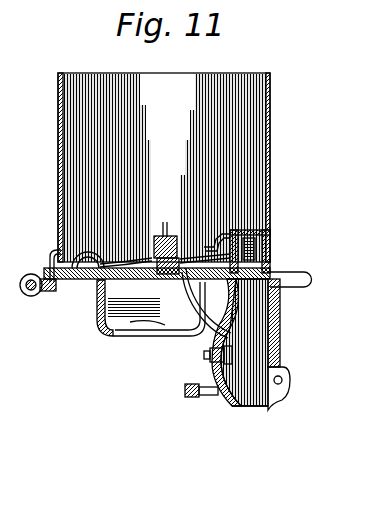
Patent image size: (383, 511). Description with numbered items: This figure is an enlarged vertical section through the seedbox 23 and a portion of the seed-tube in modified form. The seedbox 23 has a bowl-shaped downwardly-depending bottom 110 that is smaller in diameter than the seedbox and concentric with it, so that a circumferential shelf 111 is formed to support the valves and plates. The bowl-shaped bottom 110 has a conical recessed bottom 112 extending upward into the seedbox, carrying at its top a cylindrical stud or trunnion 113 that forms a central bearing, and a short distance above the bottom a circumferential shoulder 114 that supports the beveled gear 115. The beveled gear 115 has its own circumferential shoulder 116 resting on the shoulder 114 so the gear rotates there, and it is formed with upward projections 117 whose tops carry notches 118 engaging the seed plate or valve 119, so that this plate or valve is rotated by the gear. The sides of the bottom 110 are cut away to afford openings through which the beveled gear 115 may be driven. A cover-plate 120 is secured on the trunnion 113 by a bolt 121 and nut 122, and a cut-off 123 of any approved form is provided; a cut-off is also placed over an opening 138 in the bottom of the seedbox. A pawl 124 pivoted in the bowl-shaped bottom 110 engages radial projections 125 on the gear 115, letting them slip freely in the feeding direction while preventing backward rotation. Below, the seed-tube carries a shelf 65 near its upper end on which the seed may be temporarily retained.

The seedbox 23 is at (164, 167).
The shelf 65 is at (236, 404).
The bowl-shaped downwardly-depending bottom 110 is at (103, 328).
The circumferential shelf 111 is at (86, 284).
The recessed bottom 112 is at (157, 328).
The cylindrical stud or trunnion 113 is at (177, 258).
The circumferential shoulder 114 is at (122, 336).
The beveled gear 115 is at (238, 309).
The circumferential shoulder 116 is at (270, 250).
The upward projections 117 is at (272, 229).
The notches 118 is at (262, 232).
The seed plate or valve 119 is at (272, 270).
The cover-plate 120 is at (163, 226).
The bolt 121 is at (176, 258).
The nut 122 is at (167, 236).
The cut-off 123 is at (250, 190).
The pawl 124 is at (97, 307).
The radial projections 125 is at (98, 320).
The opening 138 is at (283, 294).